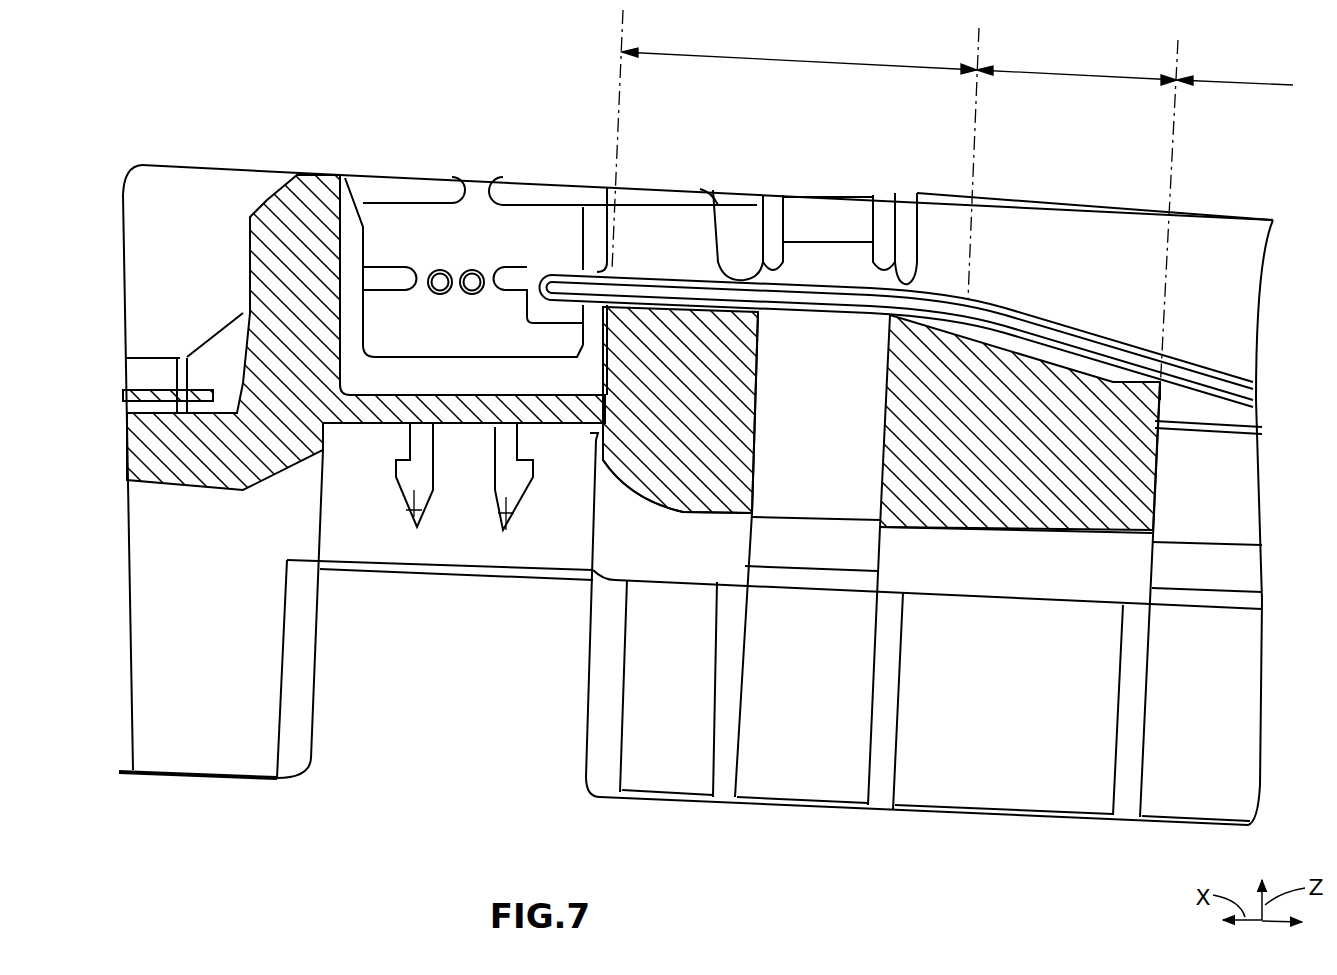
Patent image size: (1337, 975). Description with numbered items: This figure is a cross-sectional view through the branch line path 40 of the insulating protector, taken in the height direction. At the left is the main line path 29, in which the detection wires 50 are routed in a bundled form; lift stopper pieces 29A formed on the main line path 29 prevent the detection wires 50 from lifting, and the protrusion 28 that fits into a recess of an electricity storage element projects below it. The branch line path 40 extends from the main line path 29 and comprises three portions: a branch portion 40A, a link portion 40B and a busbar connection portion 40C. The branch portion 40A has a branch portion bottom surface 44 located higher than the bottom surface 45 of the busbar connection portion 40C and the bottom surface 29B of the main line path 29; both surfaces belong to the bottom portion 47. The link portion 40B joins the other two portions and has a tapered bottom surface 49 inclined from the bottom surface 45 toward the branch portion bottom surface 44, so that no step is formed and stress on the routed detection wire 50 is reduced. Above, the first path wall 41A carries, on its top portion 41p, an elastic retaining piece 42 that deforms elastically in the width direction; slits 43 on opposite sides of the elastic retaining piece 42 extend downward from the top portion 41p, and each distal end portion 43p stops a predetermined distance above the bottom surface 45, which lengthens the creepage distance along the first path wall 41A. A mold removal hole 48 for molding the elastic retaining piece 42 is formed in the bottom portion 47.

The protrusion 28 is at (507, 497).
The main line path 29 is at (413, 255).
The lift stopper pieces 29A is at (503, 183).
The bottom surface of the main line path 29B is at (512, 357).
The branch line path 40 is at (1192, 202).
The branch portion 40A is at (799, 51).
The link portion 40B is at (1077, 64).
The busbar connection portion 40C is at (1235, 69).
The first path wall 41A is at (1040, 227).
The top portion of the first path wall 41p is at (1148, 213).
The elastic retaining piece 42 is at (828, 217).
The slits 43 is at (773, 225).
The distal end portion of the slit 43p is at (916, 194).
The branch portion bottom surface 44 is at (672, 305).
The bottom surface of the busbar connection portion 45 is at (1207, 420).
The bottom portion 47 is at (643, 477).
The mold removal hole 48 is at (750, 447).
The tapered bottom surface 49 is at (1060, 367).
The detection wire 50 is at (998, 305).